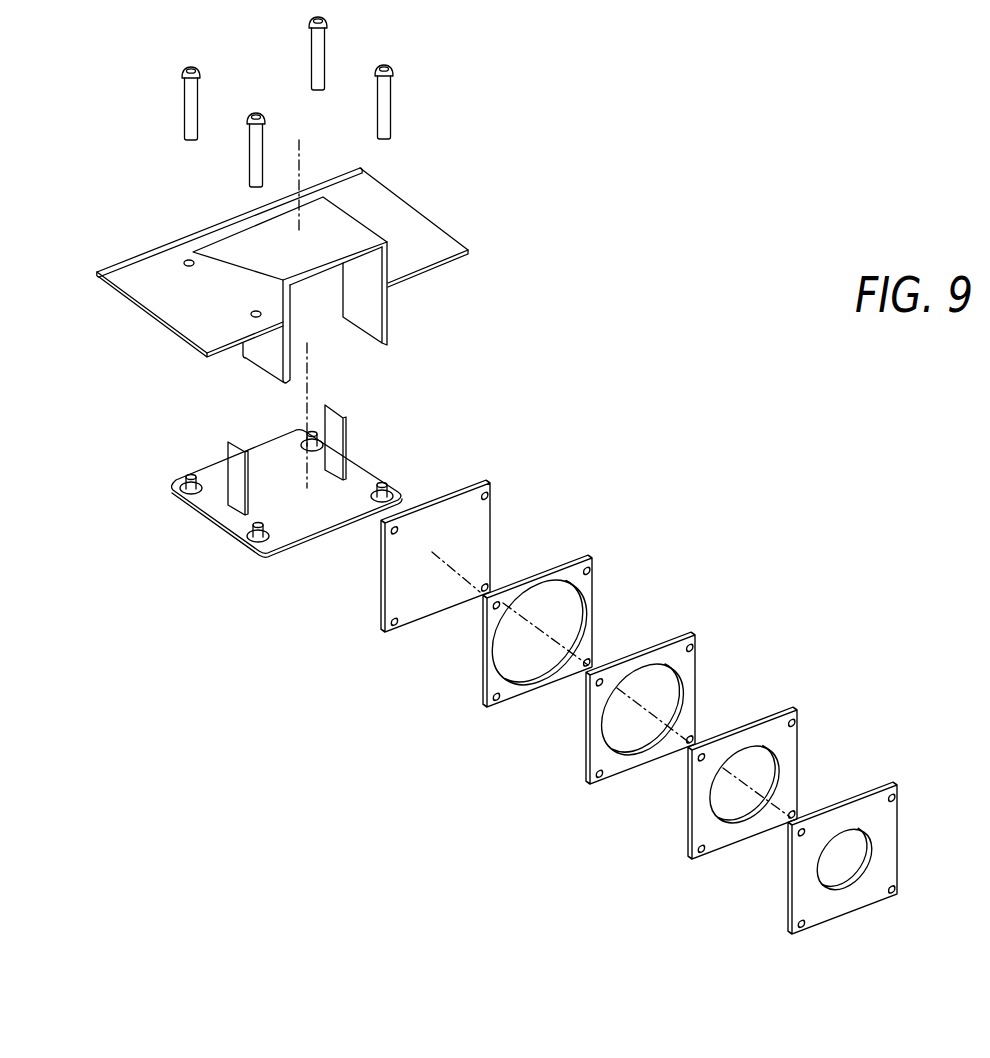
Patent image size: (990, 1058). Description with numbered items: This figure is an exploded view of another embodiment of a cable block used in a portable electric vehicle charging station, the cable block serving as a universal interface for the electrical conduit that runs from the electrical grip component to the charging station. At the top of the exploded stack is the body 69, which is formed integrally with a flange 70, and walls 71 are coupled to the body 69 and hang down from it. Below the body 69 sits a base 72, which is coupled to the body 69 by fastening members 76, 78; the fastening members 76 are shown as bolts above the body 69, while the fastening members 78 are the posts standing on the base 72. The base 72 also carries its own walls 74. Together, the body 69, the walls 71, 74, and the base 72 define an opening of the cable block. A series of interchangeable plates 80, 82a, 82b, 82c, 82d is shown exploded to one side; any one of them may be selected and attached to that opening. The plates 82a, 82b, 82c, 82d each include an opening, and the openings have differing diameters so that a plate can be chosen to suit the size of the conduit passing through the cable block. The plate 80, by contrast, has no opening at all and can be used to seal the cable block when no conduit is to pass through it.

The body 69 is at (270, 250).
The flange 70 is at (430, 245).
The walls 71 is at (387, 300).
The base 72 is at (287, 483).
The walls 74 is at (343, 432).
The fastening members 76 is at (389, 97).
The fastening members 78 is at (382, 483).
The plate 80 is at (467, 520).
The plate 82a is at (585, 582).
The plate 82b is at (687, 663).
The plate 82c is at (785, 745).
The plate 82d is at (885, 822).